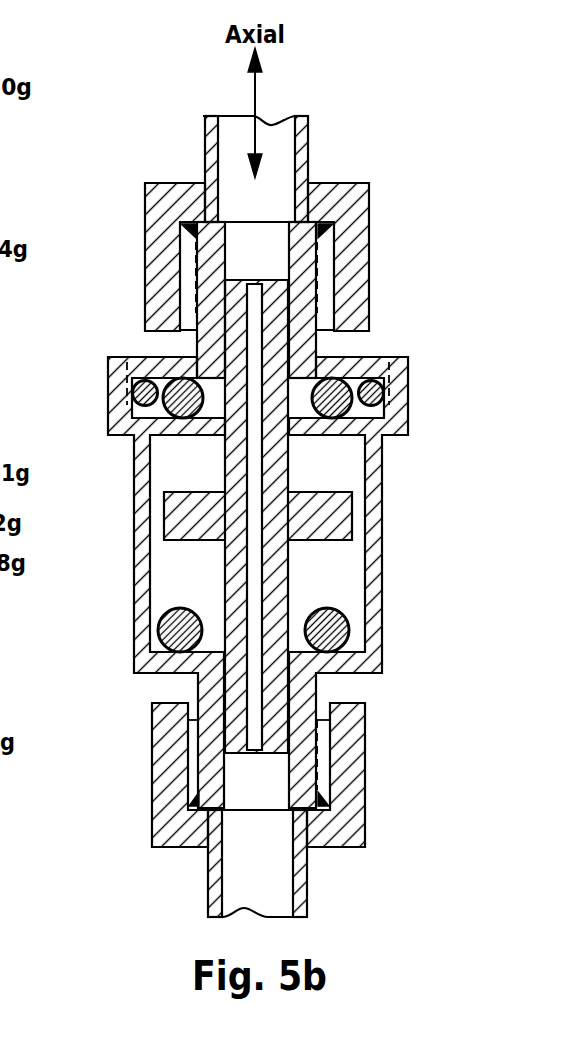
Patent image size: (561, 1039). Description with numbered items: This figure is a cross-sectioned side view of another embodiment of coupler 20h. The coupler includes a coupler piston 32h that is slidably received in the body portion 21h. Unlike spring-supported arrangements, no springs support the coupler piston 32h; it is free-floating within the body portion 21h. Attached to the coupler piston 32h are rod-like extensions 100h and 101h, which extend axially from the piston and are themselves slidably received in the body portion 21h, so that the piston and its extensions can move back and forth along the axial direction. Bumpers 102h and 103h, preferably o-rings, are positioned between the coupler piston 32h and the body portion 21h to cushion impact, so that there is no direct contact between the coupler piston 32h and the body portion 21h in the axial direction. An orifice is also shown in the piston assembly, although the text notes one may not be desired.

The coupler 20h is at (337, 179).
The rod-like extension 101h is at (283, 292).
The body portion 21h is at (408, 385).
The bumper 102h is at (162, 421).
The coupler piston 32h is at (345, 503).
The bumper 103h is at (345, 620).
The rod-like extension 100h is at (283, 689).